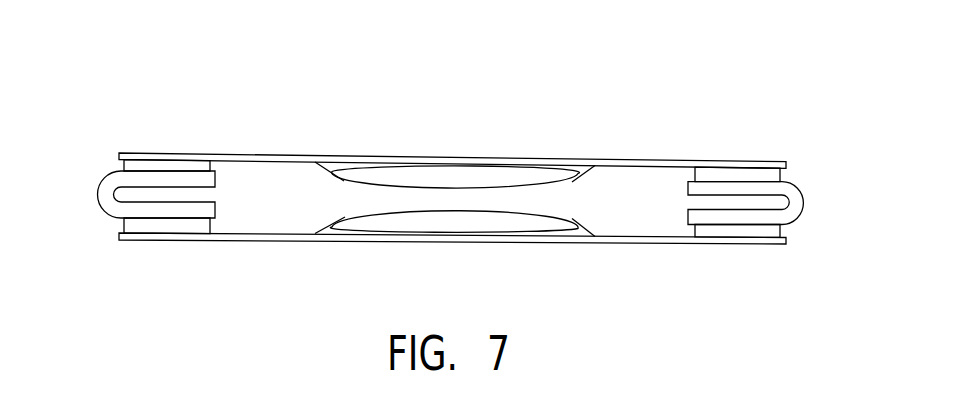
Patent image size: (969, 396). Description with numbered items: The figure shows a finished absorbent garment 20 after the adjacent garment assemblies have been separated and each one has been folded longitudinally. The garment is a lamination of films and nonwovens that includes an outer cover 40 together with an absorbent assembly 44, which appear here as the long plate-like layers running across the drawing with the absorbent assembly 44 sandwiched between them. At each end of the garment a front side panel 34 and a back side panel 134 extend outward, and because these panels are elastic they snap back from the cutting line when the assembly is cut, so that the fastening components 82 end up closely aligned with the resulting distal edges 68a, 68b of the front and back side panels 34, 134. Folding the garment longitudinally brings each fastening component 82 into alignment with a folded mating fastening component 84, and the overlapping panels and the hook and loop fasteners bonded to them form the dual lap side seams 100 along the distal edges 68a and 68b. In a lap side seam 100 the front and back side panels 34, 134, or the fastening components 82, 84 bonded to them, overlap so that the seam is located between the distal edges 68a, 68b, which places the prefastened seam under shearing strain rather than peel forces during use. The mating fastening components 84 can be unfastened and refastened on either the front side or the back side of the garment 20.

The absorbent garment 20 is at (554, 128).
The front side panel 34 is at (170, 156).
The outer cover 40 is at (253, 153).
The absorbent assembly 44 is at (457, 176).
The distal edge of front side panel 68a is at (118, 158).
The distal edge of back side panel 68b is at (112, 233).
The fastening component 82 is at (790, 180).
The mating fastening component 84 is at (86, 165).
The lap side seam 100 is at (105, 154).
The back side panel 134 is at (162, 233).